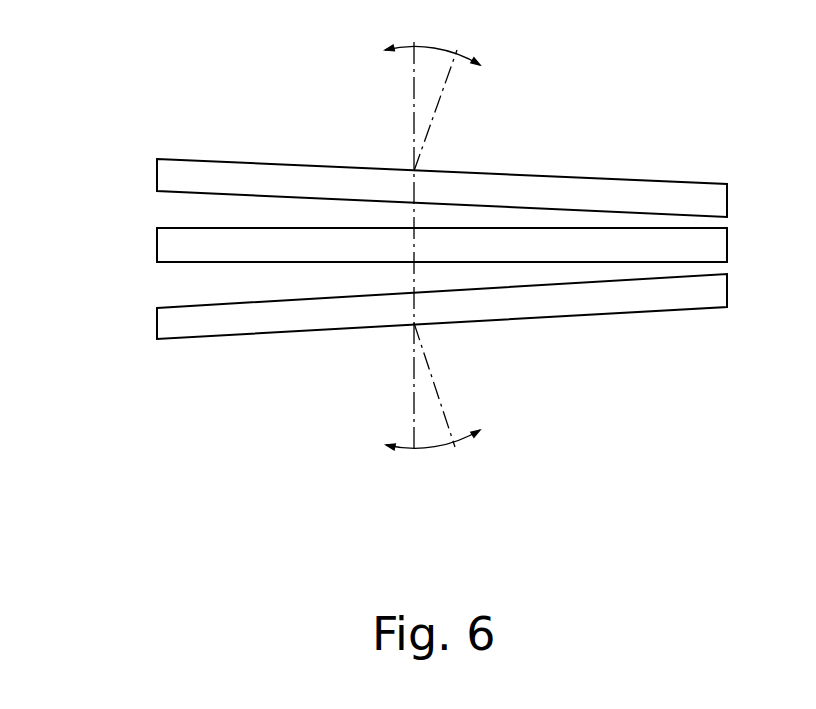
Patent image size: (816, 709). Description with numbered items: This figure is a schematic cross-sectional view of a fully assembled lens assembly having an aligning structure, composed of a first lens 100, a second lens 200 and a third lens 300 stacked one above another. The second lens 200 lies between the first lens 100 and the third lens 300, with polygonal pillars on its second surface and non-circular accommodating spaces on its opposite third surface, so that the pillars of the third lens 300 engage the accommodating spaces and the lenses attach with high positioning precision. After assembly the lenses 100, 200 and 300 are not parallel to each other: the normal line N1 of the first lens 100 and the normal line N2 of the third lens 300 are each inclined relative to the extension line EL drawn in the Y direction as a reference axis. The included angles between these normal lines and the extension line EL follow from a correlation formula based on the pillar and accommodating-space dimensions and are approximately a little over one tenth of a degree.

The first lens 100 is at (165, 178).
The second lens 200 is at (165, 248).
The third lens 300 is at (165, 326).
The extension line EL is at (414, 100).
The normal line of the first lens N1 is at (430, 134).
The normal line of the third lens N2 is at (432, 366).